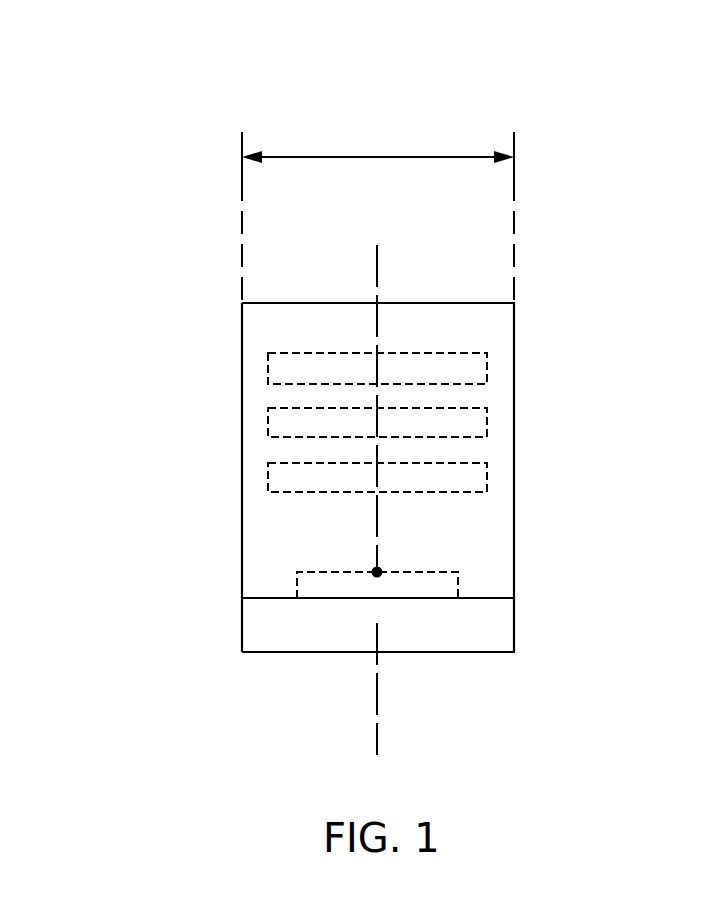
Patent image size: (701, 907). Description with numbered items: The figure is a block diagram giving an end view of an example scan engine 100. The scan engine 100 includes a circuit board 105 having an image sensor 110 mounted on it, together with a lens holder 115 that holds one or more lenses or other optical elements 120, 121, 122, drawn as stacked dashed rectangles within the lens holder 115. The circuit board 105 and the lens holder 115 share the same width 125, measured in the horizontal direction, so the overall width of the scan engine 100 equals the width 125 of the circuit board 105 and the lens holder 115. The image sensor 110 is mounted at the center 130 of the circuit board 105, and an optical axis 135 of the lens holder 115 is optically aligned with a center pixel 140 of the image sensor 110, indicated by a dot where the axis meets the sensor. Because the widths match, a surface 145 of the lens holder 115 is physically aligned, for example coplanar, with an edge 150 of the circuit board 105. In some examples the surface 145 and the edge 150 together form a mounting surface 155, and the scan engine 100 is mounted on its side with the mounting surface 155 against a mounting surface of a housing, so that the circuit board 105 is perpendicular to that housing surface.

The scan engine 100 is at (130, 40).
The circuit board 105 is at (289, 652).
The image sensor 110 is at (458, 585).
The lens holder 115 is at (514, 310).
The optical element 120 is at (487, 368).
The optical element 121 is at (487, 422).
The optical element 122 is at (487, 478).
The width 125 is at (377, 157).
The center of the circuit board 130 is at (378, 707).
The optical axis 135 is at (378, 258).
The center pixel 140 is at (374, 571).
The surface of the lens holder 145 is at (226, 421).
The edge of the circuit board 150 is at (226, 626).
The mounting surface 155 is at (155, 526).